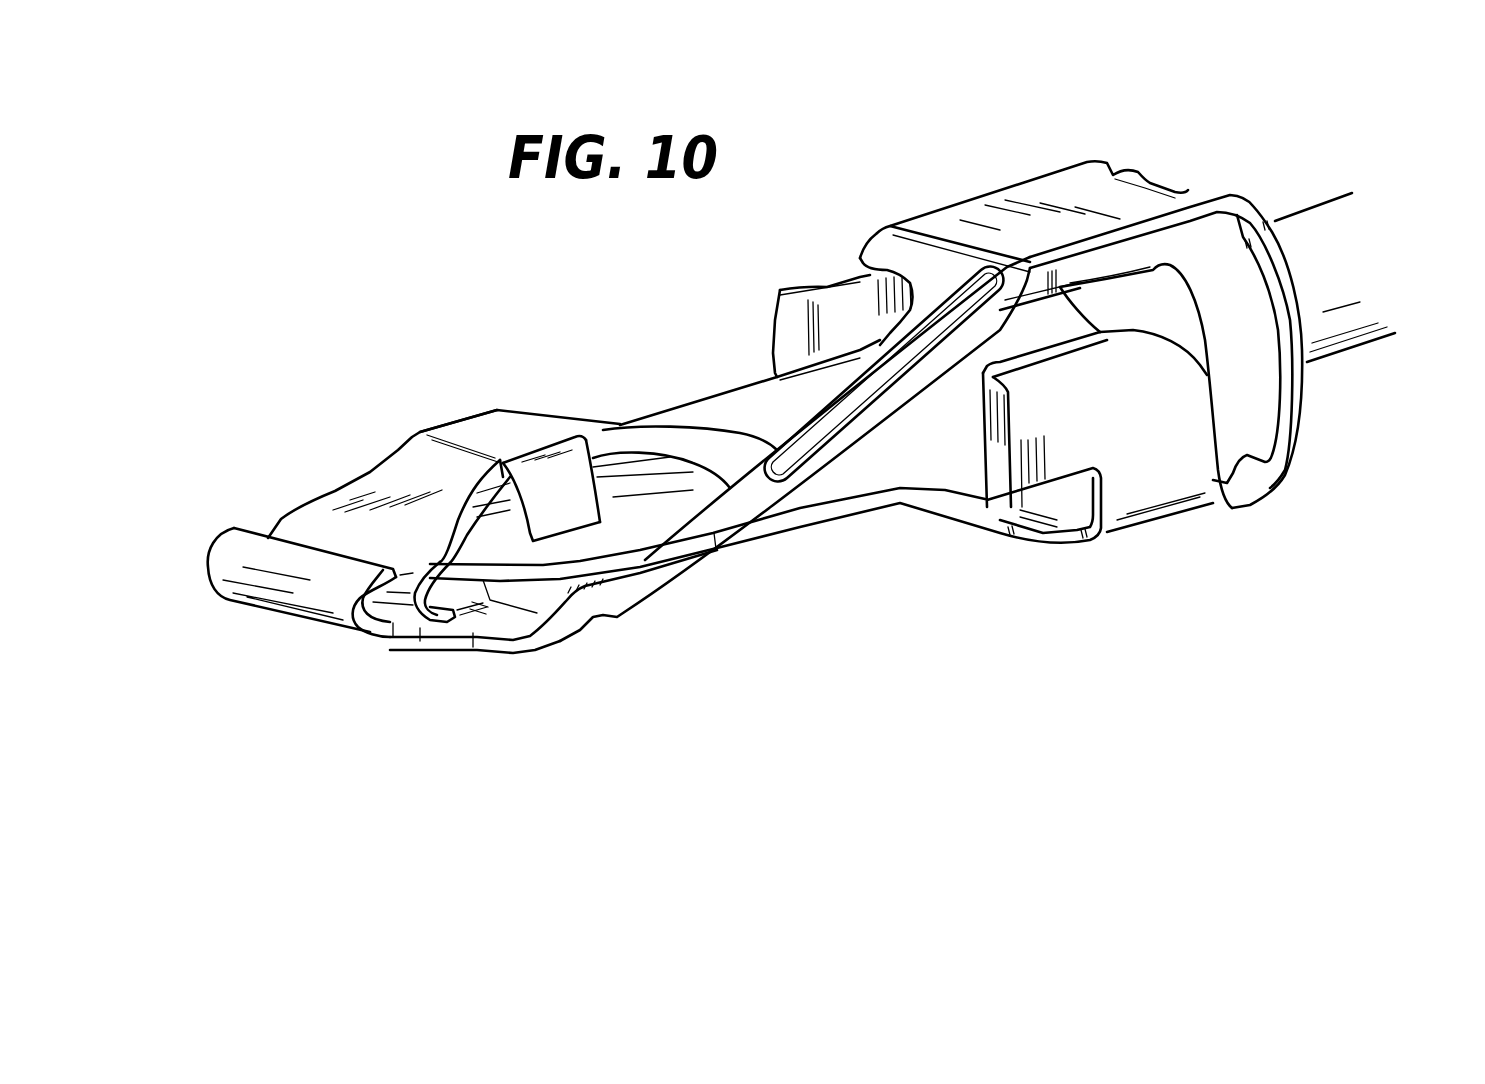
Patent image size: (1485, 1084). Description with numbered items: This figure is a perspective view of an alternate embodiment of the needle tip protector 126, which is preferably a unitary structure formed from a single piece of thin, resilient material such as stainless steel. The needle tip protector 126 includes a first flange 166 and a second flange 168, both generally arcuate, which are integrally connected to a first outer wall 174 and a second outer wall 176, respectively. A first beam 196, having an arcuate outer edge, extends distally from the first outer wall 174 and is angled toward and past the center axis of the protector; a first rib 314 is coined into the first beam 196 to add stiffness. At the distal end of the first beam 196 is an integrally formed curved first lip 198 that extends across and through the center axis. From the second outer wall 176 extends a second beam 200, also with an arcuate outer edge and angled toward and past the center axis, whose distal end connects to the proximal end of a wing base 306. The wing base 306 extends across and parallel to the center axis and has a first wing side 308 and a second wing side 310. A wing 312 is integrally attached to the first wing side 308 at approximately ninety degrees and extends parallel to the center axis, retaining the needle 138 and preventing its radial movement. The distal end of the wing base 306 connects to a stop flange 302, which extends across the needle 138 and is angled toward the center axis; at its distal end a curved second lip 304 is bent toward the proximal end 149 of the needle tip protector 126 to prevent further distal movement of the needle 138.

The needle tip protector 126 is at (680, 688).
The needle 138 is at (778, 397).
The proximal end 149 is at (1218, 195).
The first flange 166 is at (1308, 388).
The second flange 168 is at (1245, 418).
The first outer wall 174 is at (1048, 190).
The second outer wall 176 is at (958, 533).
The first beam 196 is at (724, 512).
The first lip 198 is at (280, 592).
The second beam 200 is at (595, 414).
The stop flange 302 is at (313, 500).
The second lip 304 is at (428, 612).
The wing base 306 is at (497, 433).
The first wing side 308 is at (549, 443).
The second wing side 310 is at (455, 413).
The wing 312 is at (557, 508).
The first rib 314 is at (848, 402).